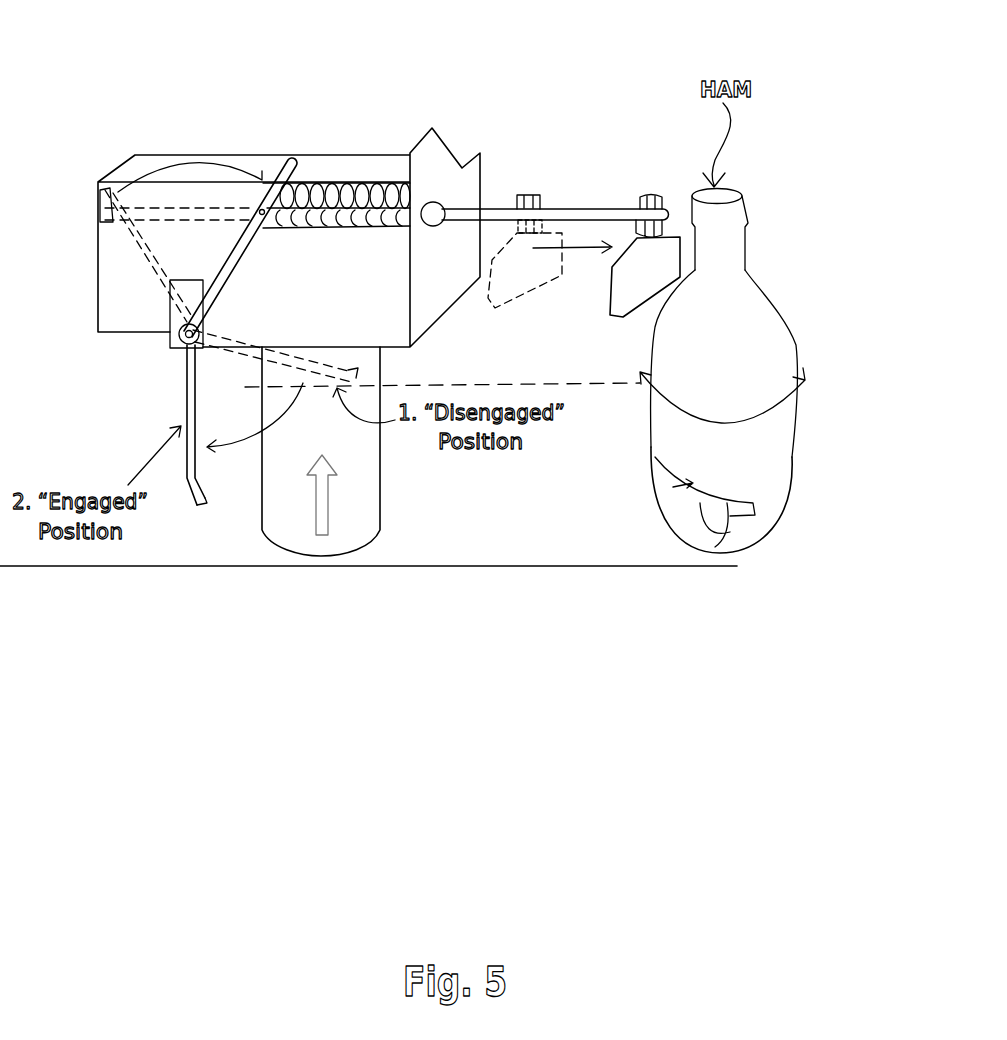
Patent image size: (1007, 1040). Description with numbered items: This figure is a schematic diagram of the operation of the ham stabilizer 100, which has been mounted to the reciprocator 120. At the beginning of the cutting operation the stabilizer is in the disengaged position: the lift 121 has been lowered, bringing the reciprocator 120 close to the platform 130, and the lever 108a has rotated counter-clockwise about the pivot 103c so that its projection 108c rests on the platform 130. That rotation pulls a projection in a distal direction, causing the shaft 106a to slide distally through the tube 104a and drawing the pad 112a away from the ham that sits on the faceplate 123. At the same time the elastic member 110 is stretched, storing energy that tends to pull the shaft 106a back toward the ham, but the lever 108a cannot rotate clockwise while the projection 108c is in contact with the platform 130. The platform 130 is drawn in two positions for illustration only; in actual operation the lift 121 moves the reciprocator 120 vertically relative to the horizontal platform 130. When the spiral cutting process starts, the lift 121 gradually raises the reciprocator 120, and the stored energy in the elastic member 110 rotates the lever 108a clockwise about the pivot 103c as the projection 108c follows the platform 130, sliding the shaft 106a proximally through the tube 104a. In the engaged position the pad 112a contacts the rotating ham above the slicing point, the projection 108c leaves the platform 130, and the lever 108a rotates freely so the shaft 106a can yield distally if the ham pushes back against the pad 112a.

The ham stabilizer 100 is at (221, 78).
The tube 104a is at (370, 187).
The elastic member 110 is at (340, 183).
The pad 112a is at (633, 267).
The shaft 106a is at (580, 215).
The reciprocator 120 is at (118, 272).
The pivot 103c is at (184, 336).
The lever 108a is at (193, 402).
The projection 108c is at (207, 503).
The lift 121 is at (380, 485).
The platform 130 is at (563, 380).
The faceplate 123 is at (778, 510).